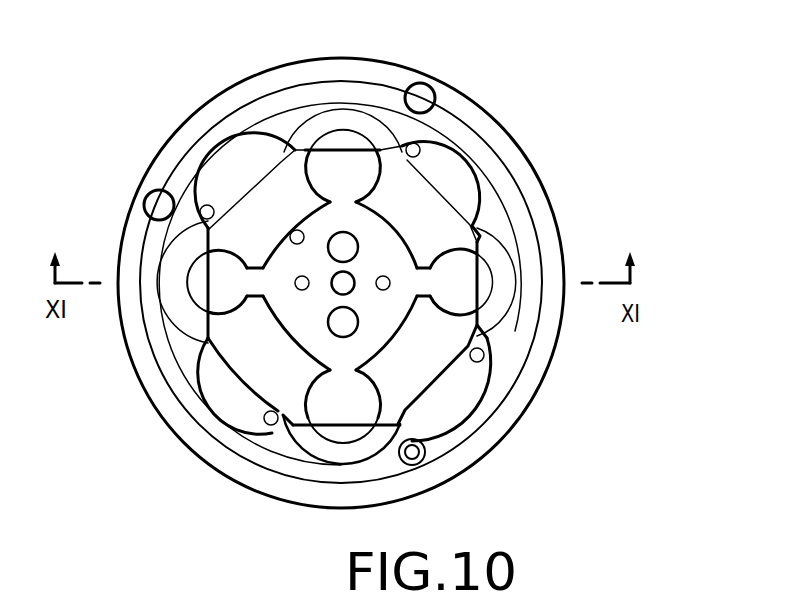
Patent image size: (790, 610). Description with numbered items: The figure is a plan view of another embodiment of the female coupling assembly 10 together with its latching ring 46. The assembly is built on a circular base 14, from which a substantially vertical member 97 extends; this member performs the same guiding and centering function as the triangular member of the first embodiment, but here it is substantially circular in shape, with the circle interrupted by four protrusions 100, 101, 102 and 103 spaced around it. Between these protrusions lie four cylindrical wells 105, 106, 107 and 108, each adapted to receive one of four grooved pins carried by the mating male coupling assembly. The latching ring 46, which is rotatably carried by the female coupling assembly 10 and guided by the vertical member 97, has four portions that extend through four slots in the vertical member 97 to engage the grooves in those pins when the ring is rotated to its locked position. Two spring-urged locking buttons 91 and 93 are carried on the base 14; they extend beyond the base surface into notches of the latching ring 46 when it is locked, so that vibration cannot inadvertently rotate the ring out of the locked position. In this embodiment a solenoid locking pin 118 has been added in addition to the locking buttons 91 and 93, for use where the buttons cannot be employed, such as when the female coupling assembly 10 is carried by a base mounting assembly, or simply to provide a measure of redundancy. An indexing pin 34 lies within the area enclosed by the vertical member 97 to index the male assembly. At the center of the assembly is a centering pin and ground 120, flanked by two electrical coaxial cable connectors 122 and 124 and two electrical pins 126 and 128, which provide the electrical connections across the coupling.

The female coupling assembly 10 is at (580, 118).
The base 14 is at (232, 470).
The indexing pin 34 is at (290, 242).
The latching ring 46 is at (173, 368).
The locking button 91 is at (150, 197).
The locking button 93 is at (427, 90).
The vertical member 97 is at (508, 258).
The protrusion 100 is at (328, 100).
The protrusion 101 is at (165, 318).
The protrusion 102 is at (318, 462).
The protrusion 103 is at (515, 330).
The cylindrical well 105 is at (348, 176).
The cylindrical well 106 is at (251, 297).
The cylindrical well 107 is at (328, 368).
The cylindrical well 108 is at (452, 293).
The solenoid locking pin 118 is at (424, 458).
The centering pin and ground 120 is at (352, 277).
The electrical coaxial cable connector 122 is at (337, 230).
The electrical coaxial cable connector 124 is at (358, 324).
The electrical pin 126 is at (294, 285).
The electrical pin 128 is at (413, 262).